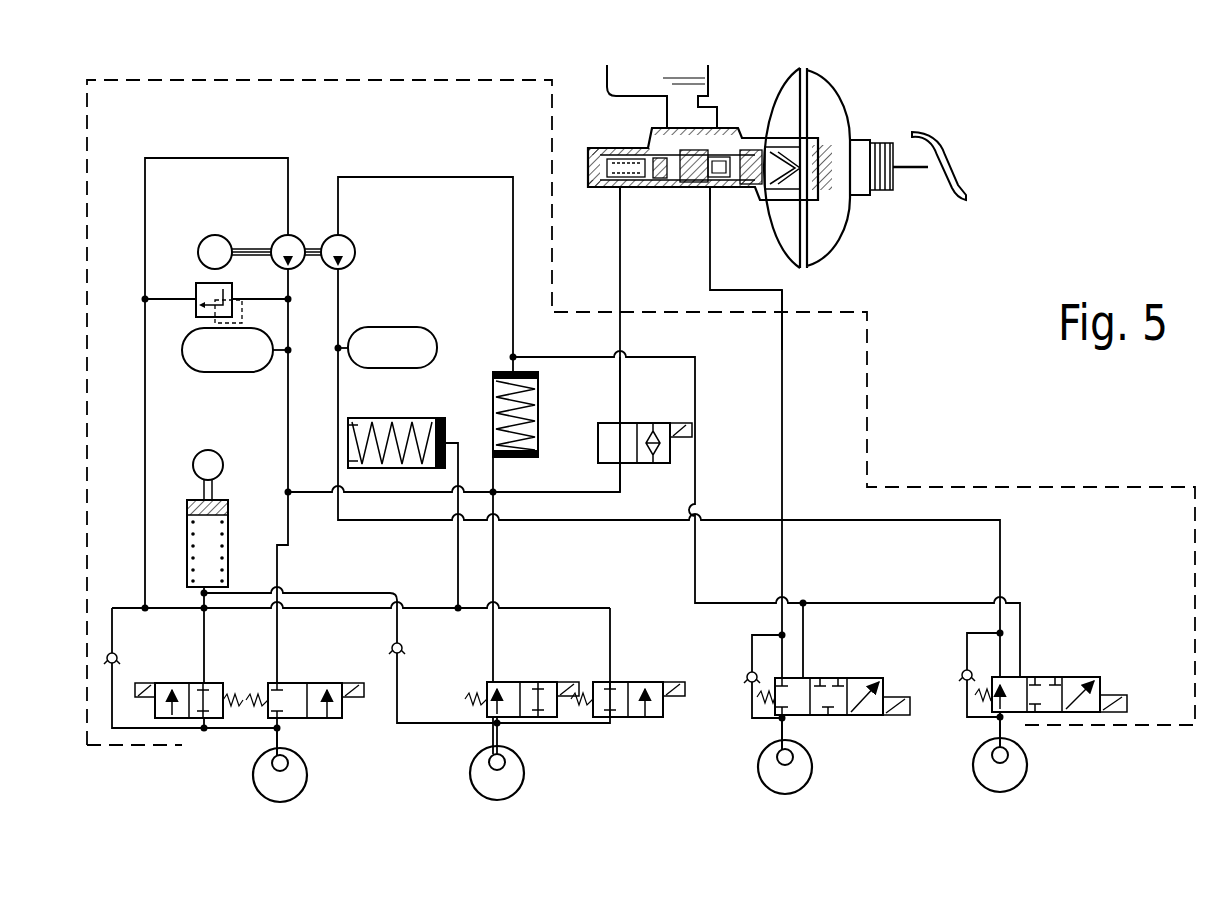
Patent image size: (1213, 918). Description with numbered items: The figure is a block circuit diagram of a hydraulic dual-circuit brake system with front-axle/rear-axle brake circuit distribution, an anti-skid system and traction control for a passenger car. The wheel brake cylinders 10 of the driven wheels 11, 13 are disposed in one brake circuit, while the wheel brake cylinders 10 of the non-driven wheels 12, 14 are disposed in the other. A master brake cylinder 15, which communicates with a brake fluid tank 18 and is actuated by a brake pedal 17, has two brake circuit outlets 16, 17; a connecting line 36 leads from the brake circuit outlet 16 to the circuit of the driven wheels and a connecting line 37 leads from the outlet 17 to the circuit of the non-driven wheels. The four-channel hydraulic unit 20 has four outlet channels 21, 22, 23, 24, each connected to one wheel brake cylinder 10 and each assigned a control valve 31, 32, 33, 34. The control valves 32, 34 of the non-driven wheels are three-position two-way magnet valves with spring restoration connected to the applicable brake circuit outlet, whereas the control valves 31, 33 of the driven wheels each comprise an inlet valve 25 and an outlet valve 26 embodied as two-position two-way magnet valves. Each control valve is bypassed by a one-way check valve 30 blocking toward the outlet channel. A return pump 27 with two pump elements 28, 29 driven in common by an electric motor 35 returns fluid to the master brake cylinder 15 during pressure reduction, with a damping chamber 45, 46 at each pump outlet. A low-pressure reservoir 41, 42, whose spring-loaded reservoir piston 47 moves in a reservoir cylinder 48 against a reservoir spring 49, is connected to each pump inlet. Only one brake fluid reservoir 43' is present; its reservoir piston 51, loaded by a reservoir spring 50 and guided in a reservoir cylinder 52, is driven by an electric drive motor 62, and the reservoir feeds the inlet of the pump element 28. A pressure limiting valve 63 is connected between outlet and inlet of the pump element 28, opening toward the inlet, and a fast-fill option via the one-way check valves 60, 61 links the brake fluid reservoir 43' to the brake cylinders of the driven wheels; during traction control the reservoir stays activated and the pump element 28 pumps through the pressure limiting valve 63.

The wheel brake cylinder 10 is at (290, 764).
The driven wheel 11 is at (292, 783).
The non-driven wheel 12 is at (795, 780).
The driven wheel 13 is at (507, 783).
The non-driven wheel 14 is at (1010, 778).
The master brake cylinder 15 is at (683, 188).
The brake circuit outlet 16 is at (620, 190).
The brake circuit outlet 17 is at (712, 188).
The brake fluid tank 18 is at (663, 80).
The four-channel hydraulic unit 20 is at (510, 80).
The outlet channel 21 is at (275, 731).
The outlet channel 22 is at (493, 726).
The outlet channel 23 is at (780, 722).
The outlet channel 24 is at (998, 722).
The inlet valve 25 is at (330, 690).
The outlet valve 26 is at (183, 690).
The return pump 27 is at (252, 241).
The pump element 28 is at (294, 268).
The pump element 29 is at (355, 257).
The one-way check valve 30 is at (748, 682).
The control valve 31 is at (220, 671).
The control valve 32 is at (844, 659).
The control valve 33 is at (587, 658).
The control valve 34 is at (1070, 659).
The electric motor 35 is at (203, 264).
The connecting line 36 is at (620, 382).
The connecting line 37 is at (784, 350).
The low-pressure reservoir 41 is at (458, 469).
The low-pressure reservoir 42 is at (488, 366).
The brake fluid reservoir 43' is at (214, 489).
The damping chamber 45 is at (243, 364).
The damping chamber 46 is at (408, 362).
The reservoir piston 47 is at (436, 465).
The reservoir cylinder 48 is at (375, 462).
The reservoir spring 49 is at (380, 420).
The reservoir spring 50 is at (228, 552).
The reservoir piston 51 is at (192, 500).
The reservoir cylinder 52 is at (228, 540).
The one-way check valve 60 is at (104, 666).
The one-way check valve 61 is at (402, 656).
The electric drive motor 62 is at (197, 452).
The pressure limiting valve 63 is at (197, 305).